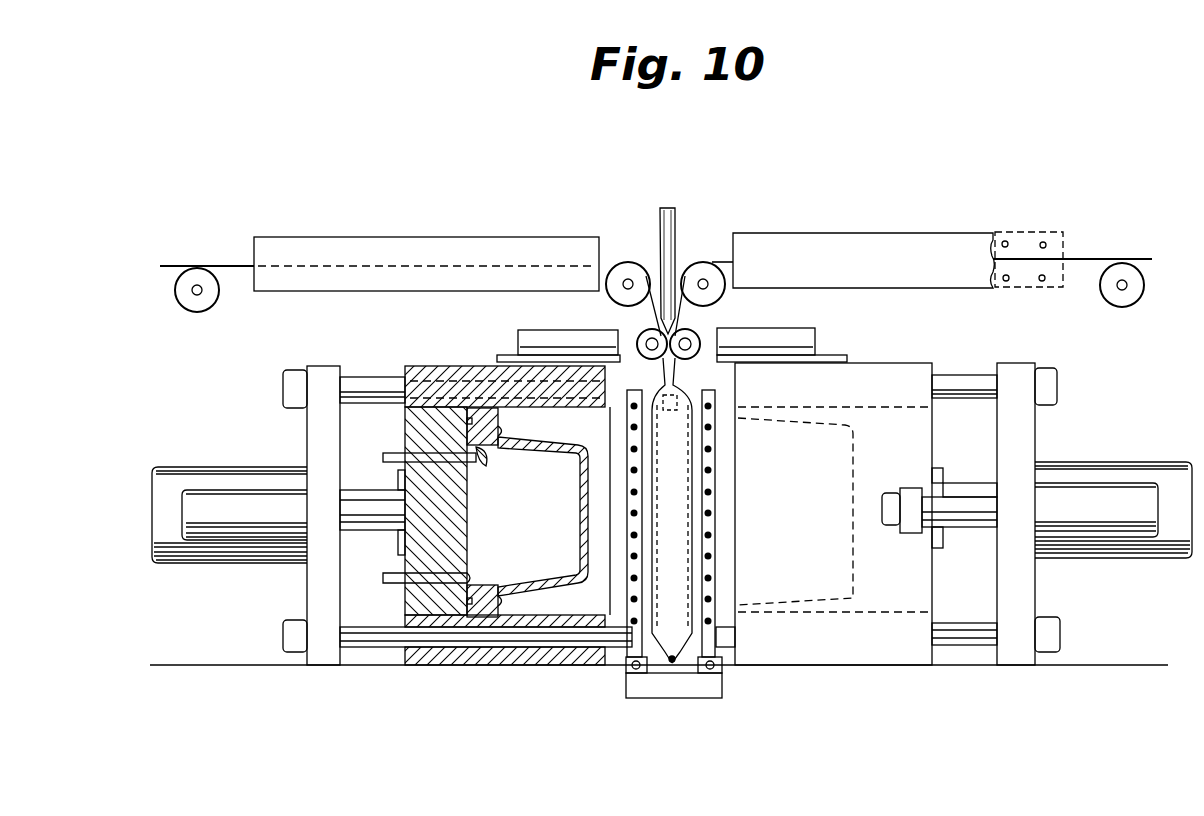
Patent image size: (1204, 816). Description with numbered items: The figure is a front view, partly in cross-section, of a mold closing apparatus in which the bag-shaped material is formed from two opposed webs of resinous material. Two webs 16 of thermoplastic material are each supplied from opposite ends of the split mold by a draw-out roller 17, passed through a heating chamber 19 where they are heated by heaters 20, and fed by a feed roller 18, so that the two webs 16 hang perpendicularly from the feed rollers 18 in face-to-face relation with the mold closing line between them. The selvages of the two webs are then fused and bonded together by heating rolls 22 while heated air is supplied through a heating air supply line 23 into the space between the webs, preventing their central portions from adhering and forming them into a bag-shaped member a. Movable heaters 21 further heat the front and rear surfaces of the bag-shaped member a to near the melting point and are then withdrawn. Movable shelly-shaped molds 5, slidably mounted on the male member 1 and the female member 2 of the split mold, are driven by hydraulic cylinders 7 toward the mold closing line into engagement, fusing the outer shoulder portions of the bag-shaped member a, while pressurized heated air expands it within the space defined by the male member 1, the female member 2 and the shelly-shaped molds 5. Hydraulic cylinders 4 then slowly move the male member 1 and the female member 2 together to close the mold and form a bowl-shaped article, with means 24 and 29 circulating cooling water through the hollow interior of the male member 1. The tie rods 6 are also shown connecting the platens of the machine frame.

The male member 1 is at (540, 585).
The female member 2 is at (882, 597).
The hydraulic cylinders 4 is at (378, 490).
The shelly-shaped molds 5 is at (582, 655).
The tie rod 6 is at (395, 632).
The hydraulic cylinders 7 is at (362, 510).
The webs 16 is at (226, 262).
The draw-out roller 17 is at (192, 300).
The feed roller 18 is at (626, 274).
The heating chamber 19 is at (378, 240).
The heaters 20 is at (1007, 240).
The movable heaters 21 is at (710, 560).
The heating rolls 22 is at (690, 332).
The heating air supply line 23 is at (676, 218).
The cooling water circulating means 24 is at (486, 468).
The cooling water circulating means 29 is at (466, 580).
The bag-shaped member a is at (677, 660).